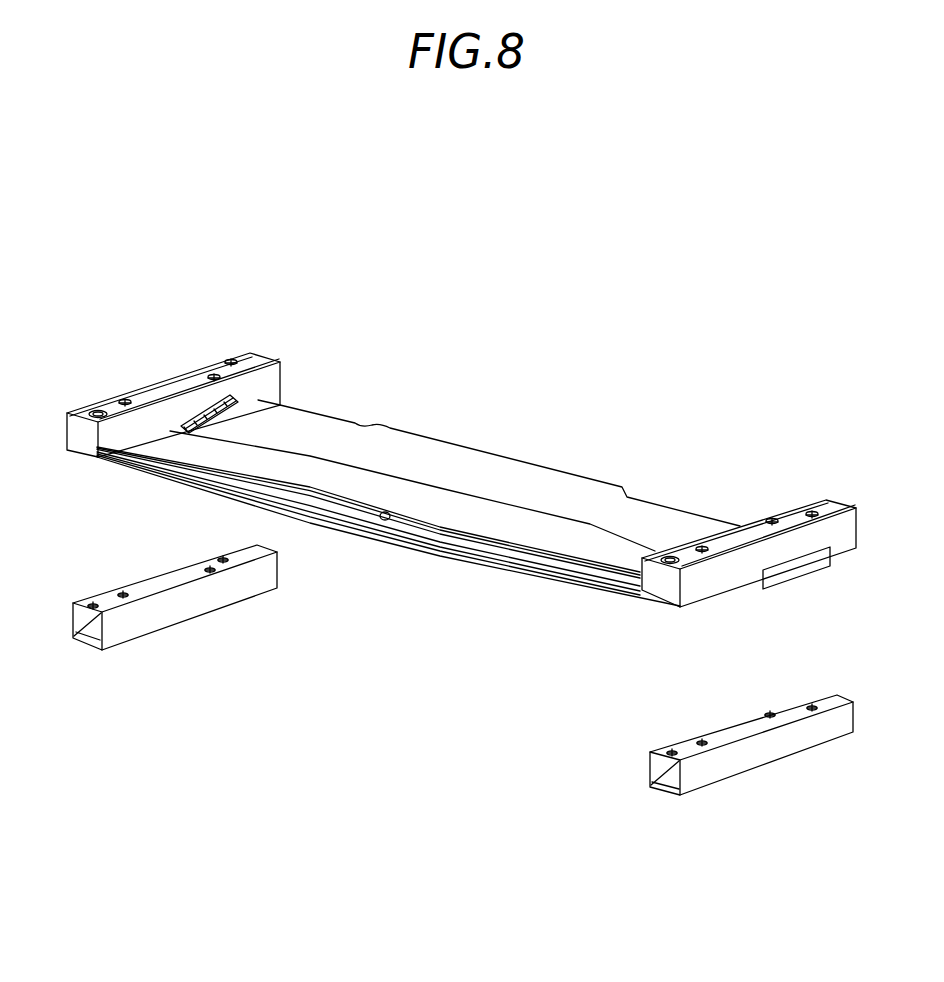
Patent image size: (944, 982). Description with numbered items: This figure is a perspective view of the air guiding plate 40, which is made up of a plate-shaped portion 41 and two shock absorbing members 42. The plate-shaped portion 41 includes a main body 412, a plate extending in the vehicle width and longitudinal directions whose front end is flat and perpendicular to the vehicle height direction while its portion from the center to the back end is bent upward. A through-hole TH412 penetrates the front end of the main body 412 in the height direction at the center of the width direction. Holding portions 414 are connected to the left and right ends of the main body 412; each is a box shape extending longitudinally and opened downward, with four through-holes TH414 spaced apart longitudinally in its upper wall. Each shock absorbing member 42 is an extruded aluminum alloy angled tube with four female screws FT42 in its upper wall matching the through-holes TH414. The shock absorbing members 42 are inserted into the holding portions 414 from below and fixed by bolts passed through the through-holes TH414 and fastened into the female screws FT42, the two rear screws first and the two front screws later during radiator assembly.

The air guiding plate 40 is at (457, 285).
The plate-shaped portion 41 is at (463, 468).
The main body 412 is at (576, 495).
The through-hole TH412 is at (384, 520).
The holding portion 414 is at (163, 381).
The through-hole TH414 is at (93, 412).
The shock absorbing member 42 is at (166, 616).
The female screw FT42 is at (92, 604).